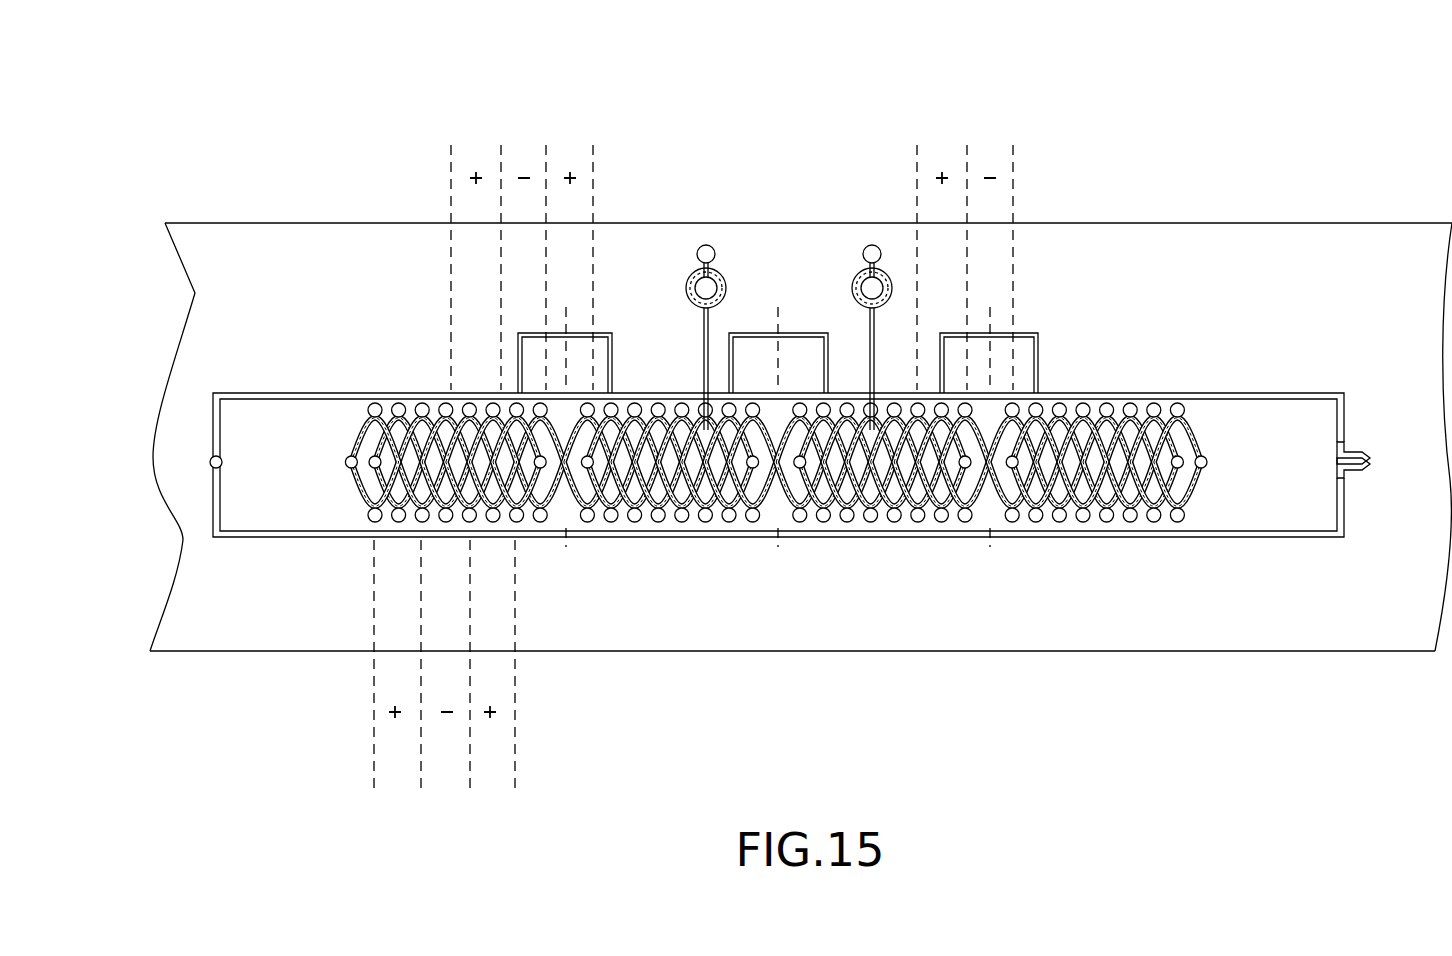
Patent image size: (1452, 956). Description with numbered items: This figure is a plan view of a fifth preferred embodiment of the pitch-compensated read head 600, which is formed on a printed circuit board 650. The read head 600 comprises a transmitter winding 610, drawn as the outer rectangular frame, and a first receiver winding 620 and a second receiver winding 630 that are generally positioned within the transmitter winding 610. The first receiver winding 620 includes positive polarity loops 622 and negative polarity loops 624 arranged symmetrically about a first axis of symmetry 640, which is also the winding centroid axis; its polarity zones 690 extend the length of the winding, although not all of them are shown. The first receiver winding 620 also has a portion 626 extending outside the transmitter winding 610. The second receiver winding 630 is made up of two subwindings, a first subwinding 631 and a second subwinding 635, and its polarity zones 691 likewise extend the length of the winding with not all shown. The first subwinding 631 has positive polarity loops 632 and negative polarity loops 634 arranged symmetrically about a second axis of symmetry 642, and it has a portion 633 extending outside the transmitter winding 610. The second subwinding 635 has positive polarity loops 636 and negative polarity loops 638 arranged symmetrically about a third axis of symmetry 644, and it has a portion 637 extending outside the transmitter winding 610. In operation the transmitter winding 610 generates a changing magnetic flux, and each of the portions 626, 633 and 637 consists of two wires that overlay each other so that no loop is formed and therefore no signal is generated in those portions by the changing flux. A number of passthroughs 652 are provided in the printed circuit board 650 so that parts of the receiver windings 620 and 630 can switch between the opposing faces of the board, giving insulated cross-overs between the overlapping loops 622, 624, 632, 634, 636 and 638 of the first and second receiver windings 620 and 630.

The pitch-compensated read head 600 is at (760, 372).
The transmitter winding 610 is at (1178, 533).
The first receiver winding 620 is at (388, 404).
The positive polarity loops 622 is at (410, 523).
The negative polarity loops 624 is at (453, 523).
The portion 626 is at (786, 333).
The second receiver winding 630 is at (353, 420).
The first subwinding 631 is at (345, 490).
The positive polarity loops 632 is at (489, 416).
The portion 633 is at (600, 333).
The negative polarity loops 634 is at (511, 430).
The second subwinding 635 is at (1212, 420).
The positive polarity loops 636 is at (1042, 416).
The portion 637 is at (1016, 333).
The negative polarity loops 638 is at (1098, 417).
The first axis of symmetry 640 is at (778, 545).
The second axis of symmetry 642 is at (566, 540).
The third axis of symmetry 644 is at (990, 545).
The printed circuit board 650 is at (205, 628).
The passthroughs 652 is at (372, 523).
The polarity zones 690 is at (395, 735).
The polarity zones 691 is at (477, 152).